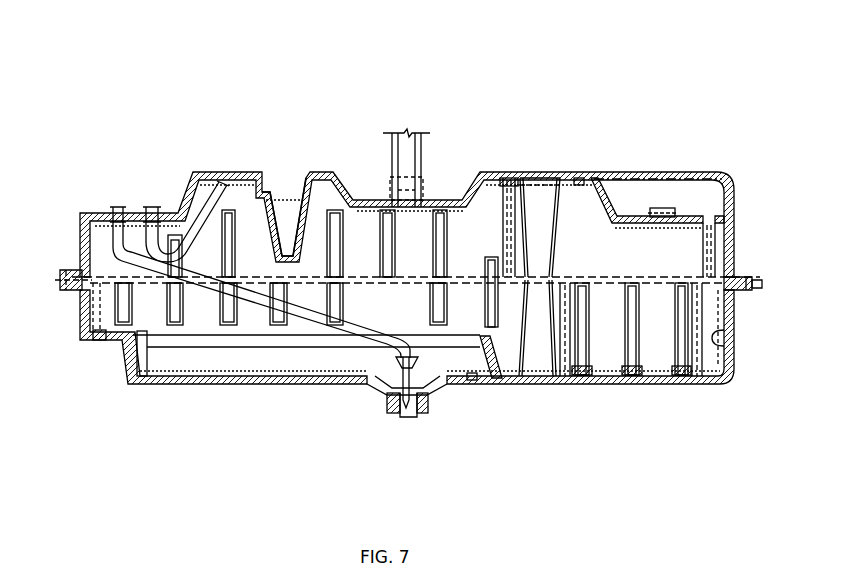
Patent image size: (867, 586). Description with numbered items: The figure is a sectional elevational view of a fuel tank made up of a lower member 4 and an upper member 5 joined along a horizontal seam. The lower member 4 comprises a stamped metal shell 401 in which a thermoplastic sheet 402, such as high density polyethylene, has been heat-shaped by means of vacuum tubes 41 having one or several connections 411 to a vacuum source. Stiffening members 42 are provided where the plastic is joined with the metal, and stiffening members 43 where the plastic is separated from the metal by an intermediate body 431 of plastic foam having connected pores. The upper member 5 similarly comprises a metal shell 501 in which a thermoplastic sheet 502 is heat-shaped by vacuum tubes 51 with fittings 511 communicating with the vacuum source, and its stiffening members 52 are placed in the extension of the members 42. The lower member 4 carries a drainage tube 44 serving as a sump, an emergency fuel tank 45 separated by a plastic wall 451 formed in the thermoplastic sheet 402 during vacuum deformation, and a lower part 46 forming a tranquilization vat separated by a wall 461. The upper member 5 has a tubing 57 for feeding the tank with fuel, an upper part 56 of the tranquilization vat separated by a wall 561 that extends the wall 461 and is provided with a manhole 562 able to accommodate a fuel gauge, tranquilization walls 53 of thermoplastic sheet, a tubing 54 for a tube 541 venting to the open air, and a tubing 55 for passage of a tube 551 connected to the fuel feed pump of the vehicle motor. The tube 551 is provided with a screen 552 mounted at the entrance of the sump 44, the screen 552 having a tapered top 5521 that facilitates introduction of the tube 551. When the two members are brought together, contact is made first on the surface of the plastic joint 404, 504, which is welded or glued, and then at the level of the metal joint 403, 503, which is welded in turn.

The upper member 5 is at (660, 86).
The lower member 4 is at (672, 457).
The tubing 57 is at (407, 148).
The tubing 55 is at (111, 212).
The tube 551 is at (133, 256).
The tubing 54 is at (145, 211).
The tube 541 is at (206, 212).
The tranquilization walls 53 is at (296, 236).
The vacuum tubes 51 is at (100, 218).
The fittings 511 is at (507, 268).
The wall 561 is at (533, 206).
The upper part of the tranquilization vat 56 is at (578, 233).
The manhole 562 is at (660, 209).
The thermoplastic sheet 502 is at (722, 190).
The metal shell 501 is at (728, 183).
The plastic joint 504 is at (738, 272).
The metal joint 503 is at (741, 281).
The connections 411 is at (695, 278).
The stiffening members 52 is at (181, 265).
The stiffening members 42 is at (178, 310).
The stiffening members 43 is at (580, 363).
The intermediate body 431 is at (583, 386).
The lower part 46 is at (655, 370).
The vacuum tubes 41 is at (97, 339).
The emergency fuel tank 45 is at (268, 358).
The plastic wall 451 is at (489, 386).
The wall 461 is at (536, 386).
The tapered top 5521 is at (419, 358).
The screen 552 is at (395, 378).
The drainage tube 44 is at (397, 412).
The metal joint 403 is at (736, 298).
The plastic joint 404 is at (726, 340).
The thermoplastic sheet 402 is at (733, 370).
The metal shell 401 is at (727, 386).